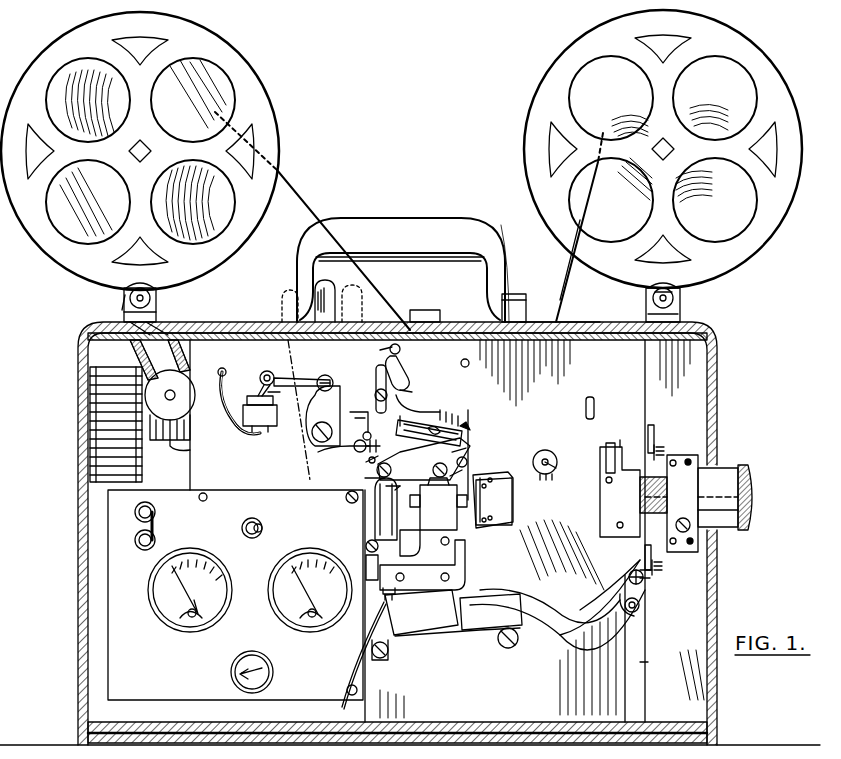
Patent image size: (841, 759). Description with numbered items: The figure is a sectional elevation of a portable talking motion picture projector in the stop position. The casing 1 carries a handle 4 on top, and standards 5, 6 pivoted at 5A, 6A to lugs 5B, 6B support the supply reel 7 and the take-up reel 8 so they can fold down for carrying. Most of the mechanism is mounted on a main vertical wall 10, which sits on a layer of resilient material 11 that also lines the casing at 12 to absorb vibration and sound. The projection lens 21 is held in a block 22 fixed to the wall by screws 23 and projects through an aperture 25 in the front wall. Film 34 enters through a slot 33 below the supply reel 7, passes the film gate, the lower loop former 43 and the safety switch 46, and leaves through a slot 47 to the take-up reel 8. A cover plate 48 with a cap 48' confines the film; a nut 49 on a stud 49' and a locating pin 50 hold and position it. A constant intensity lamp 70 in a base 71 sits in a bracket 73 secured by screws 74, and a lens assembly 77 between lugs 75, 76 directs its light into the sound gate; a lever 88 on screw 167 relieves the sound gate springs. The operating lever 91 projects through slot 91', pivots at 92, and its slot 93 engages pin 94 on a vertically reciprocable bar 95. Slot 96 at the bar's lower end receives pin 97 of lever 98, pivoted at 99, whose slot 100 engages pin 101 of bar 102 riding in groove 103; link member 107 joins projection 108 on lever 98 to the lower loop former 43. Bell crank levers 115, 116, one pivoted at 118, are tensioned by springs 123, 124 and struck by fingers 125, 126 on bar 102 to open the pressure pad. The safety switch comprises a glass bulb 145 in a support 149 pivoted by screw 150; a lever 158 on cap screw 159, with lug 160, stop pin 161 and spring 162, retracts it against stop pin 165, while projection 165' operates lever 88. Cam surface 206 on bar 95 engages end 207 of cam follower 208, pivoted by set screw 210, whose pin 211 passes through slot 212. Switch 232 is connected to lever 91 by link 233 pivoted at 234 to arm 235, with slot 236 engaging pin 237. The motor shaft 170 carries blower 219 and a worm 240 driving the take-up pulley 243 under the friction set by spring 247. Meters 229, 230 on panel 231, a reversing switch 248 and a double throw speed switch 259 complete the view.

The casing 1 is at (717, 605).
The handle 4 is at (398, 241).
The standard 5 is at (681, 306).
The pivot 5A is at (681, 292).
The lug 5B is at (681, 316).
The standard 6 is at (152, 300).
The pivot 6A is at (124, 298).
The lug 6B is at (124, 313).
The supply reel 7 is at (798, 186).
The take-up reel 8 is at (282, 140).
The main vertical wall 10 is at (286, 469).
The resilient material 11 is at (474, 722).
The lining 12 is at (592, 328).
The projection lens 21 is at (724, 470).
The block 22 is at (692, 499).
The screws 23 is at (688, 460).
The aperture 25 is at (722, 530).
The slot 33 is at (528, 325).
The film 34 is at (566, 280).
The lower loop former 43 is at (598, 618).
The safety switch 46 is at (468, 428).
The slot 47 is at (430, 325).
The cover plate 48 is at (560, 417).
The cap 48' is at (496, 487).
The nut 49 is at (556, 454).
The stud 49' is at (554, 484).
The locating pin 50 is at (468, 367).
The constant intensity lamp 70 is at (375, 512).
The base 71 is at (366, 546).
The bracket 73 is at (455, 570).
The screws 74 is at (445, 545).
The lug 75 is at (434, 517).
The lug 76 is at (478, 530).
The lens assembly 77 is at (444, 509).
The lever 88 is at (456, 455).
The operating lever 91 is at (337, 297).
The slot 91' is at (334, 303).
The pivot 92 is at (322, 452).
The slot 93 is at (366, 460).
The pin 94 is at (358, 442).
The vertically reciprocable bar 95 is at (366, 480).
The slot 96 is at (366, 632).
The pin 97 is at (382, 660).
The lever 98 is at (480, 650).
The pivot 99 is at (512, 648).
The slot 100 is at (640, 600).
The pin 101 is at (640, 614).
The vertically reciprocable bar 102 is at (646, 590).
The groove 103 is at (657, 662).
The link member 107 is at (512, 602).
The projection 108 is at (448, 618).
The bell crank lever 115 is at (655, 495).
The bell crank lever 116 is at (656, 572).
The pivot 118 is at (628, 578).
The tension spring 123 is at (662, 446).
The tension spring 124 is at (670, 564).
The finger 125 is at (654, 428).
The finger 126 is at (645, 548).
The glass bulb 145 is at (430, 438).
The support 149 is at (412, 420).
The screw 150 is at (452, 412).
The lever 158 is at (423, 459).
The cap screw 159 is at (368, 462).
The lug 160 is at (343, 495).
The stop pin 161 is at (407, 480).
The spring 162 is at (357, 423).
The stop pin 165 is at (478, 466).
The projection 165' is at (390, 496).
The screw 167 is at (457, 475).
The motor shaft 170 is at (160, 440).
The cam surface 206 is at (375, 372).
The end 207 is at (422, 396).
The cam follower 208 is at (410, 366).
The set screw 210 is at (414, 384).
The pin 211 is at (401, 347).
The slot 212 is at (378, 350).
The blower 219 is at (116, 368).
The meter 229 is at (208, 560).
The meter 230 is at (310, 556).
The panel 231 is at (200, 675).
The switch 232 is at (260, 414).
The link 233 is at (284, 374).
The pivot 234 is at (276, 392).
The arm 235 is at (262, 386).
The slot 236 is at (338, 420).
The pin 237 is at (324, 375).
The worm 240 is at (175, 440).
The pulley 243 is at (170, 370).
The spring 247 is at (184, 391).
The reversing switch 248 is at (154, 526).
The double throw switch 259 is at (262, 526).